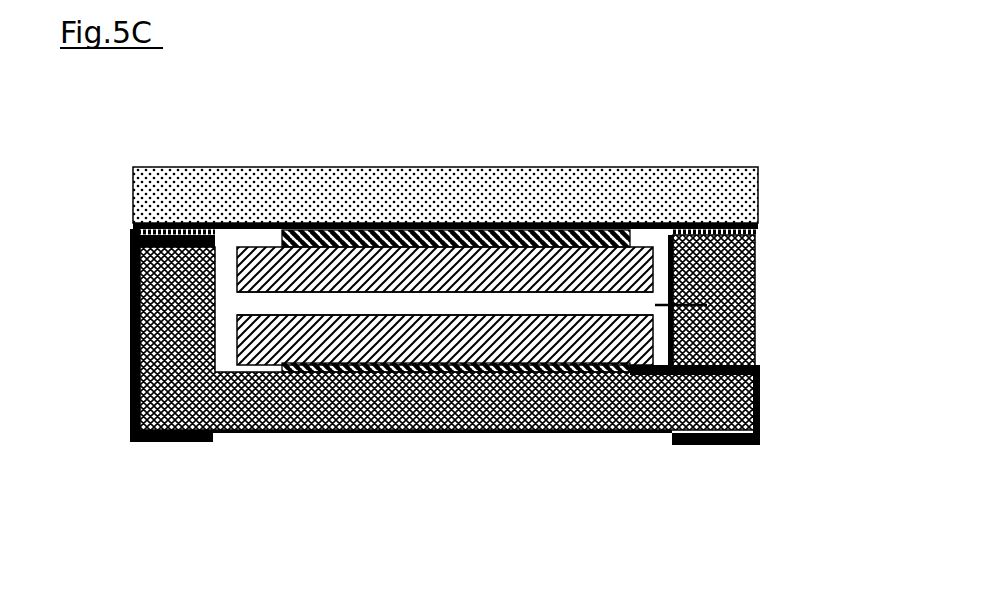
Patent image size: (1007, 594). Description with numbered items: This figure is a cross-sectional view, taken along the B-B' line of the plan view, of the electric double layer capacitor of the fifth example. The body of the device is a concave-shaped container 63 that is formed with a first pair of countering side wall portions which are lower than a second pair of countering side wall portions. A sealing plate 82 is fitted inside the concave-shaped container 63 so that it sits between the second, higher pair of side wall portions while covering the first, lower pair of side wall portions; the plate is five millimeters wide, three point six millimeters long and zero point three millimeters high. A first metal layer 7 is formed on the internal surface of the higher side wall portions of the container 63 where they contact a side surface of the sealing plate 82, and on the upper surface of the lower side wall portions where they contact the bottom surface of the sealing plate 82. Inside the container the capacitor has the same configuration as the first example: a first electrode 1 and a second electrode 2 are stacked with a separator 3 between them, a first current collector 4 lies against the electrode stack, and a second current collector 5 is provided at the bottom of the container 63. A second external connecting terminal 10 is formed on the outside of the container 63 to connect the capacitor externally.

The sealing plate 82 is at (470, 193).
The first current collector 4 is at (302, 237).
The first metal layer 7 is at (130, 230).
The first electrode 1 is at (250, 280).
The second electrode 2 is at (250, 345).
The separator 3 is at (692, 327).
The concave-shaped container 63 is at (187, 392).
The second current collector 5 is at (283, 432).
The second external connecting terminal 10 is at (760, 412).